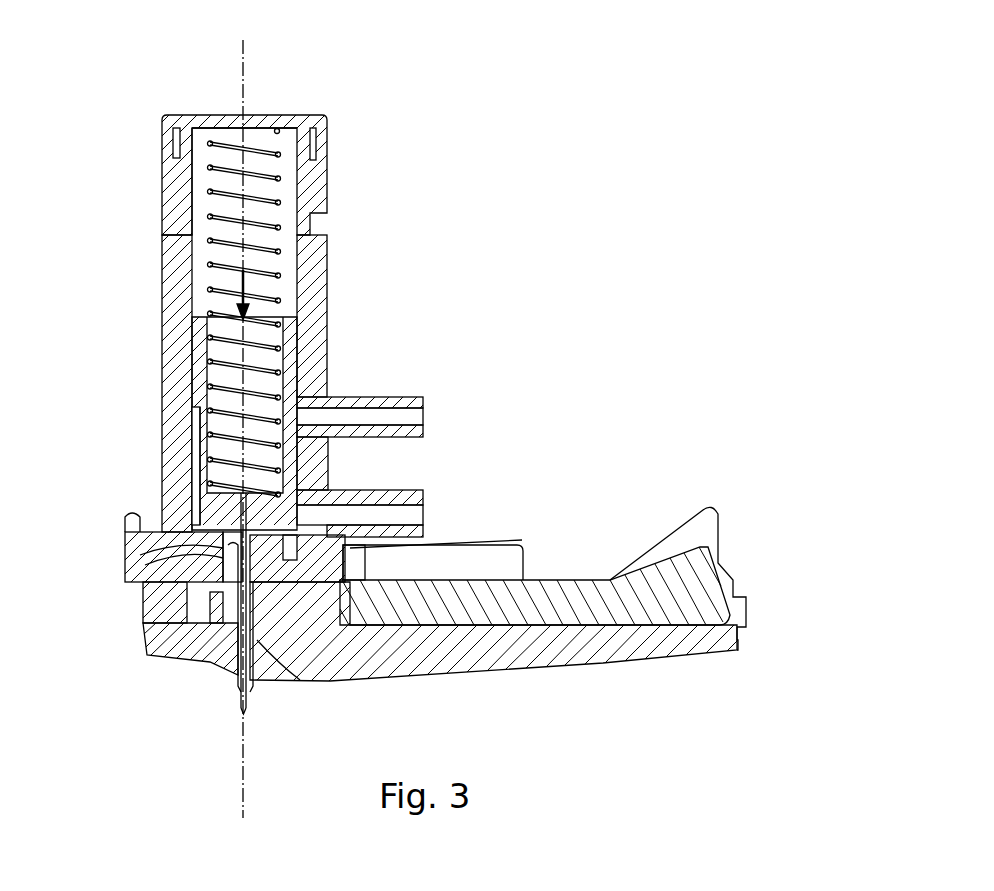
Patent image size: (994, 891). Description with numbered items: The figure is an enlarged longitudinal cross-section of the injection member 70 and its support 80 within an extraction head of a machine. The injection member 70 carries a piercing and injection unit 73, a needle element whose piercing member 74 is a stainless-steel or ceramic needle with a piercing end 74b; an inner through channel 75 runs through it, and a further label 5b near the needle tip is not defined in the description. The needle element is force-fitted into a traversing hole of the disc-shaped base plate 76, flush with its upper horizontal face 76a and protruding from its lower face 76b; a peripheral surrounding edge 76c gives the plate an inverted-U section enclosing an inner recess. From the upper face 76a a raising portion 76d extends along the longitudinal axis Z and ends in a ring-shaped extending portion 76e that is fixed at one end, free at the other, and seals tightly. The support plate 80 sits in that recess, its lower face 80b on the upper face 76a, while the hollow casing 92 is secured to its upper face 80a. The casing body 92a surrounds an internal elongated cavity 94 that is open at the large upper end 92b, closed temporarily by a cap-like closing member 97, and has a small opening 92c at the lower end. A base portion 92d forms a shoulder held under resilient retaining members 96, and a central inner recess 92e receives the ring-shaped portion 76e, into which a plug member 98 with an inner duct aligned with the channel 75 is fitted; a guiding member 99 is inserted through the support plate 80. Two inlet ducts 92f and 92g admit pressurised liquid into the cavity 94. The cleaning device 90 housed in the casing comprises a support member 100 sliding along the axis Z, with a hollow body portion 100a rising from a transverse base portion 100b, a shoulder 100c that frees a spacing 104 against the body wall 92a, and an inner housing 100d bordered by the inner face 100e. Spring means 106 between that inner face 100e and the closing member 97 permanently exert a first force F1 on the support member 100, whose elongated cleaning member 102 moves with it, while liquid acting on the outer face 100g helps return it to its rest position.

The injection member 70 is at (748, 685).
The piercing and injection unit 73 is at (228, 732).
The piercing member 74 is at (296, 629).
The opposite end of piercing member 74b is at (262, 699).
The inner through channel 75 is at (236, 680).
The skin contact surface 5b is at (237, 693).
The base plate 76 is at (443, 590).
The upper horizontal face of base plate 76a is at (490, 600).
The lower face of base plate 76b is at (255, 672).
The peripheral surrounding edge 76c is at (746, 597).
The raising portion 76d is at (150, 640).
The ring-shaped extending portion 76e is at (169, 612).
The support plate 80 is at (535, 612).
The upper face of support plate 80a is at (593, 578).
The lower face of support plate 80b is at (500, 660).
The cleaning device 90 is at (193, 433).
The hollow casing 92 is at (267, 386).
The body of casing 92a is at (180, 295).
The upper end of casing 92b is at (310, 118).
The small opening at lower end of casing 92c is at (182, 522).
The base portion of casing 92d is at (128, 570).
The central inner recess 92e is at (287, 673).
The inlet opening 92f is at (405, 492).
The inlet opening 92g is at (415, 398).
The internal elongated cavity 94 is at (201, 240).
The resilient retaining member 96 is at (125, 520).
The closing member 97 is at (283, 115).
The plug member 98 is at (140, 555).
The guiding member 99 is at (215, 655).
The support member 100 is at (285, 417).
The body portion 100a is at (195, 440).
The supporting transverse element 100b is at (280, 500).
The shoulder 100c is at (188, 395).
The inner housing 100d is at (290, 345).
The inner face of supporting transverse element 100e is at (305, 468).
The outer face of supporting transverse element 100g is at (422, 508).
The elongated cleaning member 102 is at (352, 548).
The spacing 104 is at (200, 475).
The spring means 106 is at (280, 242).
The first predetermined force F1 is at (255, 285).
The longitudinal axis Z is at (243, 790).